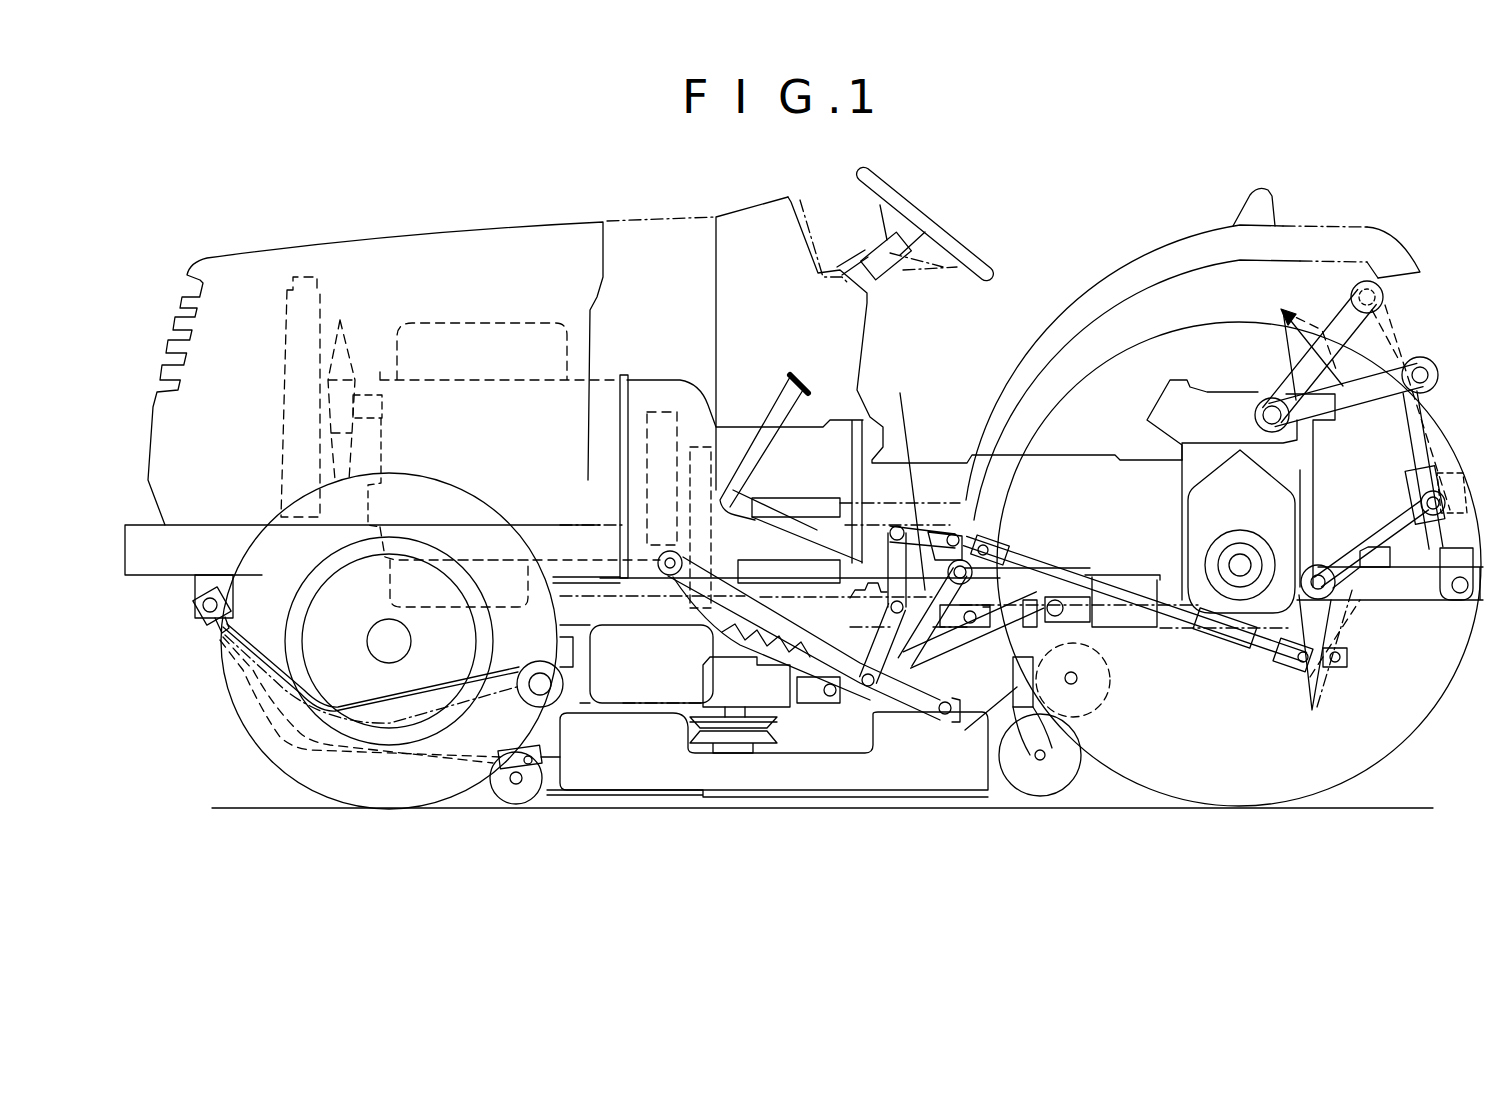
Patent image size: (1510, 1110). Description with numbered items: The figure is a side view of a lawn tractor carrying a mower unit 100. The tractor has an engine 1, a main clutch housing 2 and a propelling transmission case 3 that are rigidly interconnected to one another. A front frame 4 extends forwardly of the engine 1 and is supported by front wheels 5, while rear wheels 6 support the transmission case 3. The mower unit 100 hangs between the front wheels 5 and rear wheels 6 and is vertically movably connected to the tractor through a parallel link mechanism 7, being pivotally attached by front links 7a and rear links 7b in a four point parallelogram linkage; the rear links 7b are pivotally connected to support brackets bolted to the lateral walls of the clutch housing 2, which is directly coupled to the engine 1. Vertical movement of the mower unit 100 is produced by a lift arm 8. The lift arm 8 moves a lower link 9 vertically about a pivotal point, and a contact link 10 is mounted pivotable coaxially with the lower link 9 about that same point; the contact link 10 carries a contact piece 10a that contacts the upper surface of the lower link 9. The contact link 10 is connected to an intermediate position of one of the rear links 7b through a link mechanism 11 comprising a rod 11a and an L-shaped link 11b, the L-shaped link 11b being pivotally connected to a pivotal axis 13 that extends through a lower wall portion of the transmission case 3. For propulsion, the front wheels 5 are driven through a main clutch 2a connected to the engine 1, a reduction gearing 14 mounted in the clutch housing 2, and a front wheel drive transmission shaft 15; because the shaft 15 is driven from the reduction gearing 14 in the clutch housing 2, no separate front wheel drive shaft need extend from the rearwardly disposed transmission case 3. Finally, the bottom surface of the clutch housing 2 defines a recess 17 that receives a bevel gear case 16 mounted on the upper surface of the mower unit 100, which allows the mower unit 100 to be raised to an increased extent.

The engine 1 is at (487, 322).
The main clutch housing 2 is at (827, 427).
The main clutch 2a is at (664, 410).
The propelling transmission case 3 is at (1100, 452).
The front frame 4 is at (160, 565).
The front wheels 5 is at (377, 782).
The rear wheels 6 is at (1397, 747).
The parallel link mechanism 7 is at (566, 704).
The front links 7a is at (267, 723).
The rear links 7b is at (900, 693).
The lift arm 8 is at (1352, 392).
The lower link 9 is at (1405, 600).
The contact link 10 is at (1312, 700).
The contact piece 10a is at (1377, 547).
The link mechanism 11 is at (1117, 533).
The rod 11a is at (1168, 630).
The L-shaped link 11b is at (907, 430).
The pivotal axis 13 is at (962, 535).
The reduction gearing 14 is at (716, 423).
The front wheel drive transmission shaft 15 is at (632, 593).
The bevel gear case 16 is at (770, 693).
The recess 17 is at (812, 560).
The mower unit 100 is at (617, 778).